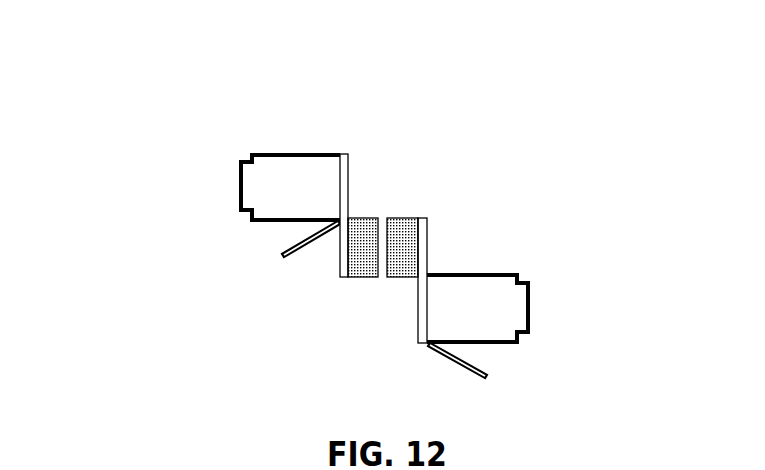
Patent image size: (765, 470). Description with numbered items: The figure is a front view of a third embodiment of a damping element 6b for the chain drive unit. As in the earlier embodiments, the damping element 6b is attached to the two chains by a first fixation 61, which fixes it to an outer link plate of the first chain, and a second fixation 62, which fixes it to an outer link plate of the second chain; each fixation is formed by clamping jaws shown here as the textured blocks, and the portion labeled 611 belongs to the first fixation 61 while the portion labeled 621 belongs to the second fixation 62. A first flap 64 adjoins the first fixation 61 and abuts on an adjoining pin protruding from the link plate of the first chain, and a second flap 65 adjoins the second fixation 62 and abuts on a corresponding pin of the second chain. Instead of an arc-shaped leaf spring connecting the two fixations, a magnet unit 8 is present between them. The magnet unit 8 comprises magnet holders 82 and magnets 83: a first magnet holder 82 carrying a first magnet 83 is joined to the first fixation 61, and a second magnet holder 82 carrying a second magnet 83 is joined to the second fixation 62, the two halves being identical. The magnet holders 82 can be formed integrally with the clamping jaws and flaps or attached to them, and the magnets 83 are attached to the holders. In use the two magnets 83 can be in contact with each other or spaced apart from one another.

The damping element 6b is at (158, 90).
The magnet unit 8 is at (409, 153).
The magnet holder 82 is at (345, 166).
The magnet 83 is at (404, 228).
The first fixation 61 is at (183, 258).
The first contact portion 611 is at (278, 187).
The first flap 64 is at (297, 259).
The second fixation 62 is at (580, 350).
The second contact portion 621 is at (508, 303).
The second flap 65 is at (467, 376).